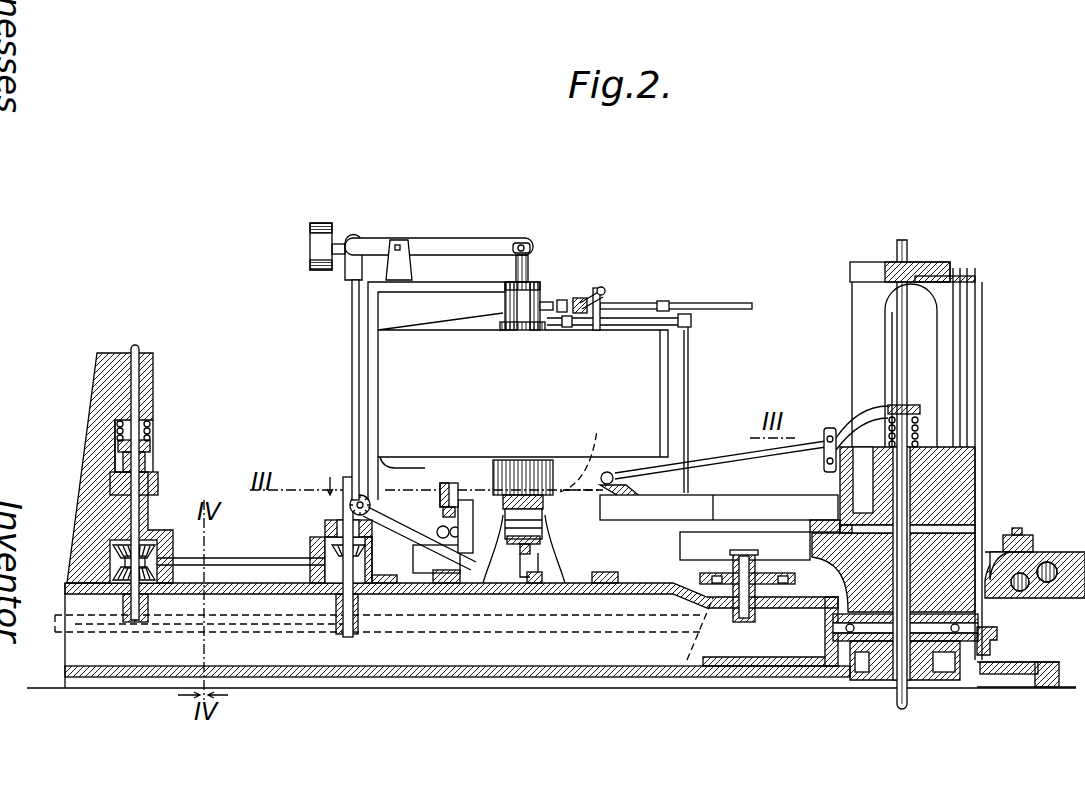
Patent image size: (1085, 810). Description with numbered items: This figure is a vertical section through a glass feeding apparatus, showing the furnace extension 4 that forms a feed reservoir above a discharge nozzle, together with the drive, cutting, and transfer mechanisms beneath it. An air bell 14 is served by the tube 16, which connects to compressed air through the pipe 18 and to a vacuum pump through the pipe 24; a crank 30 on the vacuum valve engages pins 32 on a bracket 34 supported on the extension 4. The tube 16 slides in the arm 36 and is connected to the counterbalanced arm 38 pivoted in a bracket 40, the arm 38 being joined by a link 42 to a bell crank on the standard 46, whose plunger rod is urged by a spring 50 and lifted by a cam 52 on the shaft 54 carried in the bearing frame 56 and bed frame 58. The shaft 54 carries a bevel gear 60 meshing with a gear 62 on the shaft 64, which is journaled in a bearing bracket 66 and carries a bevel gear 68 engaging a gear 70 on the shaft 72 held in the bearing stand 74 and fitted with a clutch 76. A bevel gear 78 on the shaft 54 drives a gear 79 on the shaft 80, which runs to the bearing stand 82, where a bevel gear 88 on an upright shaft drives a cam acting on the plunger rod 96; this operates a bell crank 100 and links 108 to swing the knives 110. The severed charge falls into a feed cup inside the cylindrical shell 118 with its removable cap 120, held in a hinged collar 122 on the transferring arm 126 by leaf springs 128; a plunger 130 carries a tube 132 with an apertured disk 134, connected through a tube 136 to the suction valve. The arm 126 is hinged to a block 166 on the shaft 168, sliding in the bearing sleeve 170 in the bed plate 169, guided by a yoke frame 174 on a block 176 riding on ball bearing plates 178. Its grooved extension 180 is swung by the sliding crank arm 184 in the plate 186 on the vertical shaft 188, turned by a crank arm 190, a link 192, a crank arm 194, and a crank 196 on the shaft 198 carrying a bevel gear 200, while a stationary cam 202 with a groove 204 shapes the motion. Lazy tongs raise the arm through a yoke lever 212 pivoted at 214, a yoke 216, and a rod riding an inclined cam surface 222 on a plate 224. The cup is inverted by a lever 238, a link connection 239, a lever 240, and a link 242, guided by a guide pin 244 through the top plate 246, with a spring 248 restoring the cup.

The extension 4 is at (640, 381).
The cylinder housing 14 is at (508, 332).
The tube 16 is at (530, 270).
The pipe 18 is at (612, 320).
The pipe 24 is at (653, 303).
The crank 30 is at (650, 228).
The pins 32 is at (594, 300).
The bracket 34 is at (620, 318).
The arm 36 is at (598, 288).
The counterbalanced arm 38 is at (440, 246).
The bracket 40 is at (398, 260).
The link 42 is at (368, 375).
The standard 46 is at (352, 345).
The spring 50 is at (361, 560).
The cam 52 is at (326, 528).
The shaft 54 is at (337, 597).
The bearing frame 56 is at (314, 546).
The bed frame 58 is at (268, 583).
The bevel gear 60 is at (362, 590).
The bevel gear 62 is at (288, 591).
The shaft 64 is at (190, 560).
The bearing bracket 66 is at (178, 550).
The bevel gear 68 is at (127, 563).
The bevel gear 70 is at (127, 552).
The shaft 72 is at (139, 350).
The bearing stand 74 is at (153, 380).
The clutch 76 is at (110, 482).
The bevel gear 78 is at (340, 520).
The bevel gear 79 is at (354, 497).
The shaft 80 is at (402, 520).
The bearing stand 82 is at (498, 582).
The bevel gear 88 is at (460, 584).
The plunger rod 96 is at (432, 500).
The bell crank 100 is at (440, 485).
The links 108 is at (446, 490).
The knives 110 is at (473, 487).
The cylindrical shell 118 is at (520, 495).
The removable cap 120 is at (523, 503).
The hinged collar 122 is at (713, 507).
The transferring arm 126 is at (755, 505).
The leaf springs 128 is at (548, 492).
The plunger 130 is at (528, 594).
The tube 132 is at (532, 542).
The apertured disk 134 is at (540, 540).
The tube 136 is at (520, 578).
The block 166 is at (950, 452).
The shaft 168 is at (893, 688).
The bed plate 169 is at (988, 657).
The bearing sleeve 170 is at (915, 682).
The yoke frame 174 is at (947, 312).
The block 176 is at (812, 666).
The ball bearing plates 178 is at (850, 642).
The grooved extension 180 is at (732, 563).
The sliding crank arm 184 is at (733, 563).
The plate 186 is at (685, 597).
The vertical shaft 188 is at (733, 590).
The crank arm 190 is at (687, 660).
The link 192 is at (466, 605).
The crank arm 194 is at (328, 617).
The crank 196 is at (110, 625).
The shaft 198 is at (150, 600).
The bevel gear 200 is at (128, 576).
The stationary cam 202 is at (813, 592).
The groove 204 is at (715, 595).
The yoke lever 212 is at (985, 548).
The pivot 214 is at (1048, 560).
The yoke 216 is at (1010, 528).
The inclined cam surface 222 is at (980, 636).
The plate 224 is at (977, 672).
The lever 238 is at (634, 494).
The link connection 239 is at (740, 437).
The lever 240 is at (841, 420).
The link 242 is at (824, 450).
The guide pin 244 is at (903, 378).
The top plate 246 is at (871, 252).
The spring 248 is at (913, 440).